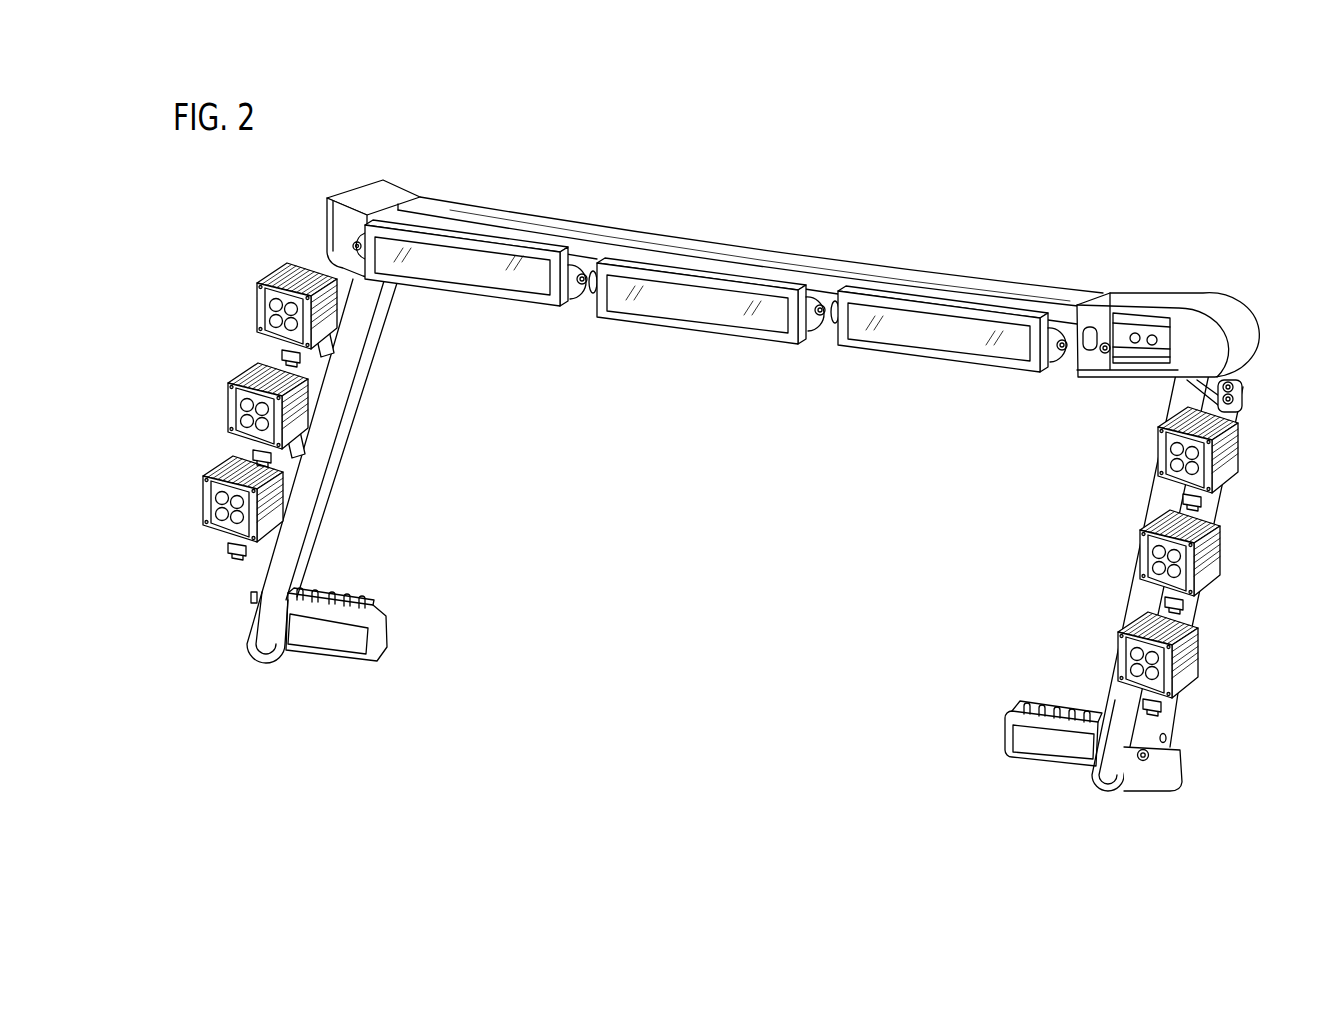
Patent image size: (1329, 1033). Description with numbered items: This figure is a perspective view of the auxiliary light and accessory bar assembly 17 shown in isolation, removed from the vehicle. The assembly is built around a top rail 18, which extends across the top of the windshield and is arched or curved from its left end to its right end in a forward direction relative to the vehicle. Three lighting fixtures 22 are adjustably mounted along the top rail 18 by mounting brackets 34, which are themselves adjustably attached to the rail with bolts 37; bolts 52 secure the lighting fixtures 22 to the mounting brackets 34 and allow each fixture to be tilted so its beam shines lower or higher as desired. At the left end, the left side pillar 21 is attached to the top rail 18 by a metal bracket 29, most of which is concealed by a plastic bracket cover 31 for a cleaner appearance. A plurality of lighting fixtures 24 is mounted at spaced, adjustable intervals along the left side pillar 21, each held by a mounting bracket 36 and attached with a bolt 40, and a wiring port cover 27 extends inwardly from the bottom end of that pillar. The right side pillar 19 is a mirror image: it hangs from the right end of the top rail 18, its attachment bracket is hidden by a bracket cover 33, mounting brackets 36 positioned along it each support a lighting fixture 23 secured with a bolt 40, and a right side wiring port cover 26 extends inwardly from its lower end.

The auxiliary light and accessory bar assembly 17 is at (920, 219).
The top rail 18 is at (702, 250).
The right side pillar 19 is at (292, 538).
The left side pillar 21 is at (1172, 500).
The lighting fixtures 22 is at (483, 273).
The lighting fixture 23 is at (270, 270).
The lighting fixtures 24 is at (1245, 443).
The right side wiring port cover 26 is at (330, 632).
The wiring port cover 27 is at (1052, 737).
The metal bracket 29 is at (1238, 397).
The plastic bracket cover 31 is at (1242, 344).
The bracket cover 33 is at (380, 193).
The mounting brackets 34 is at (577, 299).
The mounting brackets 36 is at (334, 346).
The bolts 37 is at (1107, 355).
The bolts 40 is at (298, 363).
The bolts 52 is at (584, 275).